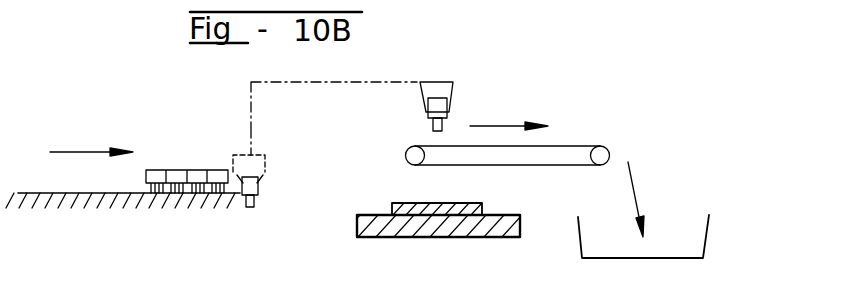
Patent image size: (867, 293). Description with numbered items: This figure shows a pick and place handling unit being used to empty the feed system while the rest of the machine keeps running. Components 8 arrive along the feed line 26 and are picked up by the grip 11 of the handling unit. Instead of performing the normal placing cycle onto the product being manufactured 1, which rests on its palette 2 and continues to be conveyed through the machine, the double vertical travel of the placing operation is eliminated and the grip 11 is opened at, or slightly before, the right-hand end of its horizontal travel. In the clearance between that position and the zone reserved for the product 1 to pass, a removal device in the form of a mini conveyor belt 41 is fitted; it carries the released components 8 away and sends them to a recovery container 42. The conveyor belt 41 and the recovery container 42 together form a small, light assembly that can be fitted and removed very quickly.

The product being manufactured 1 is at (408, 208).
The palette 2 is at (358, 225).
The component 8 is at (437, 110).
The grip 11 is at (452, 92).
The feed line 26 is at (90, 196).
The mini conveyor belt 41 is at (560, 146).
The recovery container 42 is at (706, 229).